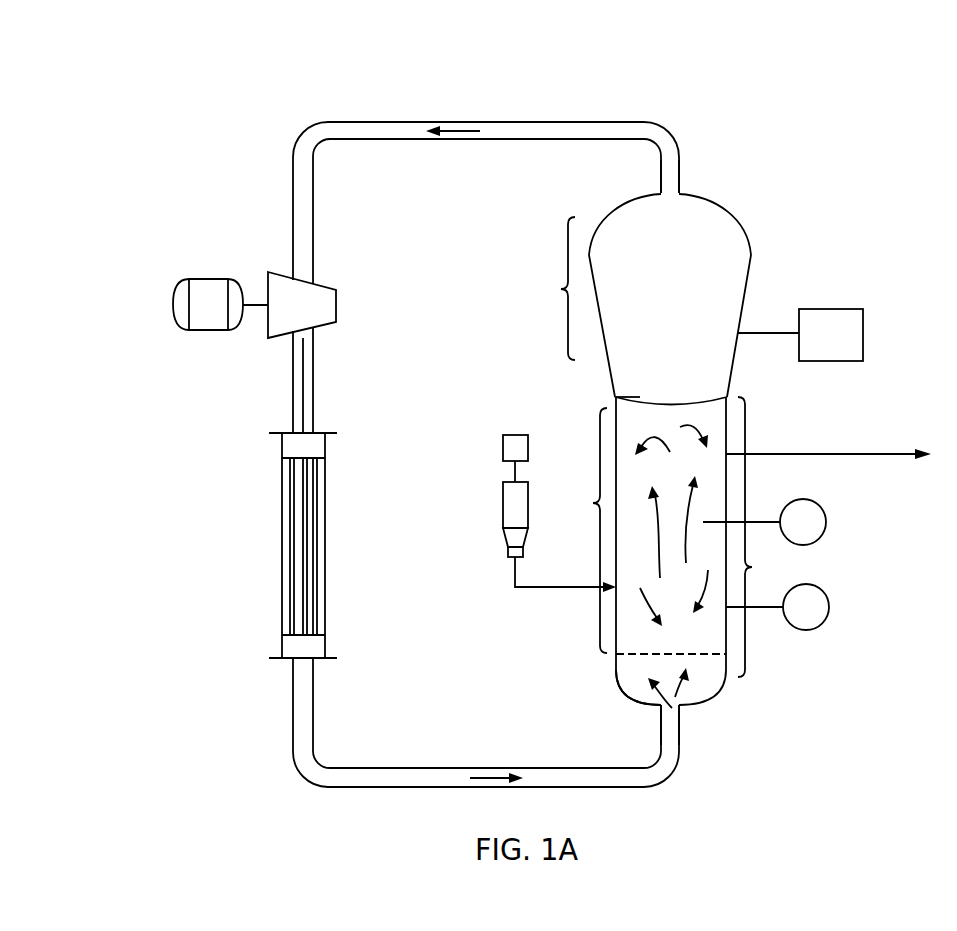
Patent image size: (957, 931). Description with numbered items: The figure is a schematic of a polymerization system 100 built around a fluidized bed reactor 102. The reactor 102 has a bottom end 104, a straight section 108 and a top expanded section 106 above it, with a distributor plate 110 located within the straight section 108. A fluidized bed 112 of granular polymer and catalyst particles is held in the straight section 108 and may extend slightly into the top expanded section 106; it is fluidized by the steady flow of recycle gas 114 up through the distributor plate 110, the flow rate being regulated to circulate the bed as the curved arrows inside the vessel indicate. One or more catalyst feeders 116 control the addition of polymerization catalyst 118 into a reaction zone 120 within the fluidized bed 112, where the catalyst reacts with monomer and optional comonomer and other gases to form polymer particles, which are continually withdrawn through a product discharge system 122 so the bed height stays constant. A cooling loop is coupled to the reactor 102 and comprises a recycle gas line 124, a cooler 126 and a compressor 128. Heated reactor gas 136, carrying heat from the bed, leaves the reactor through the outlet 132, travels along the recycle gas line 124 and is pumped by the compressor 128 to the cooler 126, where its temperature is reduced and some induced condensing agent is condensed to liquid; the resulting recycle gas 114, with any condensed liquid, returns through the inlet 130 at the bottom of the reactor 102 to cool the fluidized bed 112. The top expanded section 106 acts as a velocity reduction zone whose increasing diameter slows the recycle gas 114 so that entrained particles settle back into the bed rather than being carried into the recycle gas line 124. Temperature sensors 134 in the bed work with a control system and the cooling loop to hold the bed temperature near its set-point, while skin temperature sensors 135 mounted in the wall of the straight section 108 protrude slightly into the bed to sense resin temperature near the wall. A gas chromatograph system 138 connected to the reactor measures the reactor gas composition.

The polymerization system 100 is at (124, 47).
The fluidized bed reactor 102 is at (752, 237).
The bottom end 104 is at (637, 703).
The top expanded section 106 is at (548, 288).
The straight section 108 is at (768, 537).
The distributor plate 110 is at (631, 655).
The fluidized bed 112 is at (616, 400).
The recycle gas 114 is at (488, 776).
The catalyst feeder 116 is at (500, 510).
The polymerization catalyst 118 is at (543, 578).
The reaction zone 120 is at (582, 530).
The product discharge system 122 is at (873, 452).
The recycle gas line 124 is at (557, 121).
The cooler 126 is at (282, 478).
The compressor 128 is at (338, 300).
The inlet 130 is at (673, 717).
The outlet 132 is at (677, 183).
The temperature sensor 134 is at (826, 508).
The skin temperature sensor 135 is at (828, 595).
The heated reactor gas 136 is at (460, 128).
The gas chromatograph system 138 is at (838, 308).